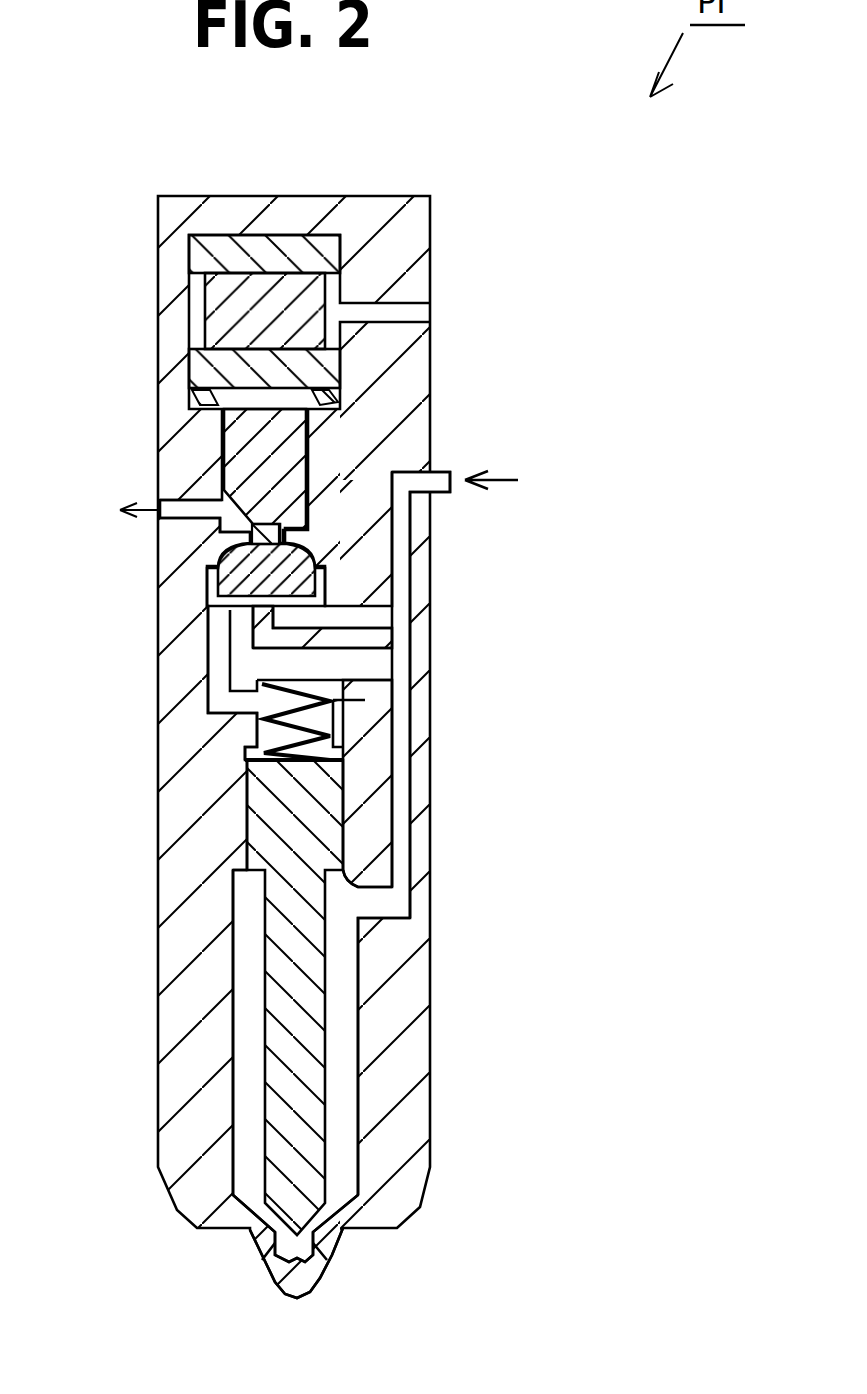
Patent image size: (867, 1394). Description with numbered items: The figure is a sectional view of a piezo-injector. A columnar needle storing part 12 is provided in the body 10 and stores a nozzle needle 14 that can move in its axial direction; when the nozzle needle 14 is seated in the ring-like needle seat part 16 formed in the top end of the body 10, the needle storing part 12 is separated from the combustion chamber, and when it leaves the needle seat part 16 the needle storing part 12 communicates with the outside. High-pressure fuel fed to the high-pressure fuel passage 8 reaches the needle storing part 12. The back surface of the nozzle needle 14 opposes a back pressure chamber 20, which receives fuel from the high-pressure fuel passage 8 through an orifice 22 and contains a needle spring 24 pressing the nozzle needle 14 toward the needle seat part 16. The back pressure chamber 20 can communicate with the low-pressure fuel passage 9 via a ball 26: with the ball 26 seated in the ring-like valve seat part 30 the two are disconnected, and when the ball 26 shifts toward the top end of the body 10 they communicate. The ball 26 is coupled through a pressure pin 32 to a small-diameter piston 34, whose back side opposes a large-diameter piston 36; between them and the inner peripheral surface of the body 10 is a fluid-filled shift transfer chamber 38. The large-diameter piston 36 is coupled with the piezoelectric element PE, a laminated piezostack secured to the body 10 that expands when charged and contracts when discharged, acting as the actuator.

The body 10 is at (413, 248).
The piezoelectric element PE is at (213, 302).
The large-diameter piston 36 is at (193, 358).
The shift transfer chamber 38 is at (205, 414).
The small-diameter piston 34 is at (218, 437).
The low-pressure fuel passage 9 is at (173, 500).
The pressure pin 32 is at (248, 540).
The valve seat part 30 is at (232, 563).
The ball 26 is at (207, 600).
The high-pressure fuel passage 8 is at (402, 662).
The needle spring 24 is at (257, 712).
The orifice 22 is at (367, 697).
The back pressure chamber 20 is at (250, 745).
The needle storing part 12 is at (361, 1168).
The needle seat part 16 is at (252, 1200).
The nozzle needle 14 is at (340, 1215).